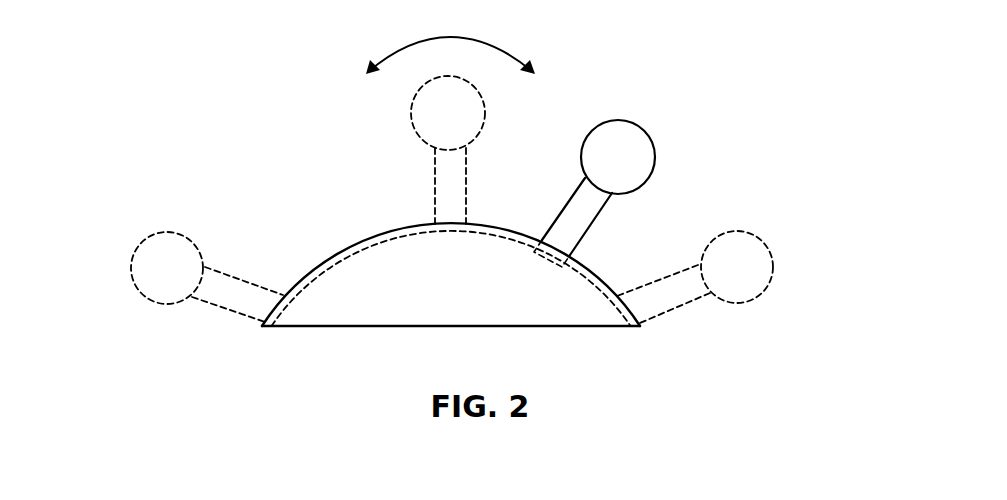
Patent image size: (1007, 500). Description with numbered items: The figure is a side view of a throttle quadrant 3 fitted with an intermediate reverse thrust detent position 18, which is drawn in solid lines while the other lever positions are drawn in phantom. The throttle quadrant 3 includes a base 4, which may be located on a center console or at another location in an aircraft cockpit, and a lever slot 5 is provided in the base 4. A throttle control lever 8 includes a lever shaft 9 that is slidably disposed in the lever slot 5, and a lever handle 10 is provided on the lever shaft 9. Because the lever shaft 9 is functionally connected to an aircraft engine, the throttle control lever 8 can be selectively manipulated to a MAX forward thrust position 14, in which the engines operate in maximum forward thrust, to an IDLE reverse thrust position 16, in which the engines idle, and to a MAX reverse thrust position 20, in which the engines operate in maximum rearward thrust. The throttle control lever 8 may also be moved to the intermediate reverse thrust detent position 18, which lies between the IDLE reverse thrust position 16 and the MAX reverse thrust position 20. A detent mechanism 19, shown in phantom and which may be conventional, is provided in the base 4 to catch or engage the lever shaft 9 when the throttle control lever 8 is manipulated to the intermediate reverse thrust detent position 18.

The throttle quadrant 3 is at (614, 88).
The base 4 is at (450, 312).
The lever slot 5 is at (403, 237).
The throttle control lever 8 is at (489, 110).
The lever shaft 9 is at (587, 196).
The lever handle 10 is at (467, 130).
The MAX forward thrust position 14 is at (284, 297).
The IDLE reverse thrust position 16 is at (476, 221).
The intermediate reverse thrust detent position 18 is at (570, 255).
The detent mechanism 19 is at (545, 262).
The MAX reverse thrust position 20 is at (643, 320).